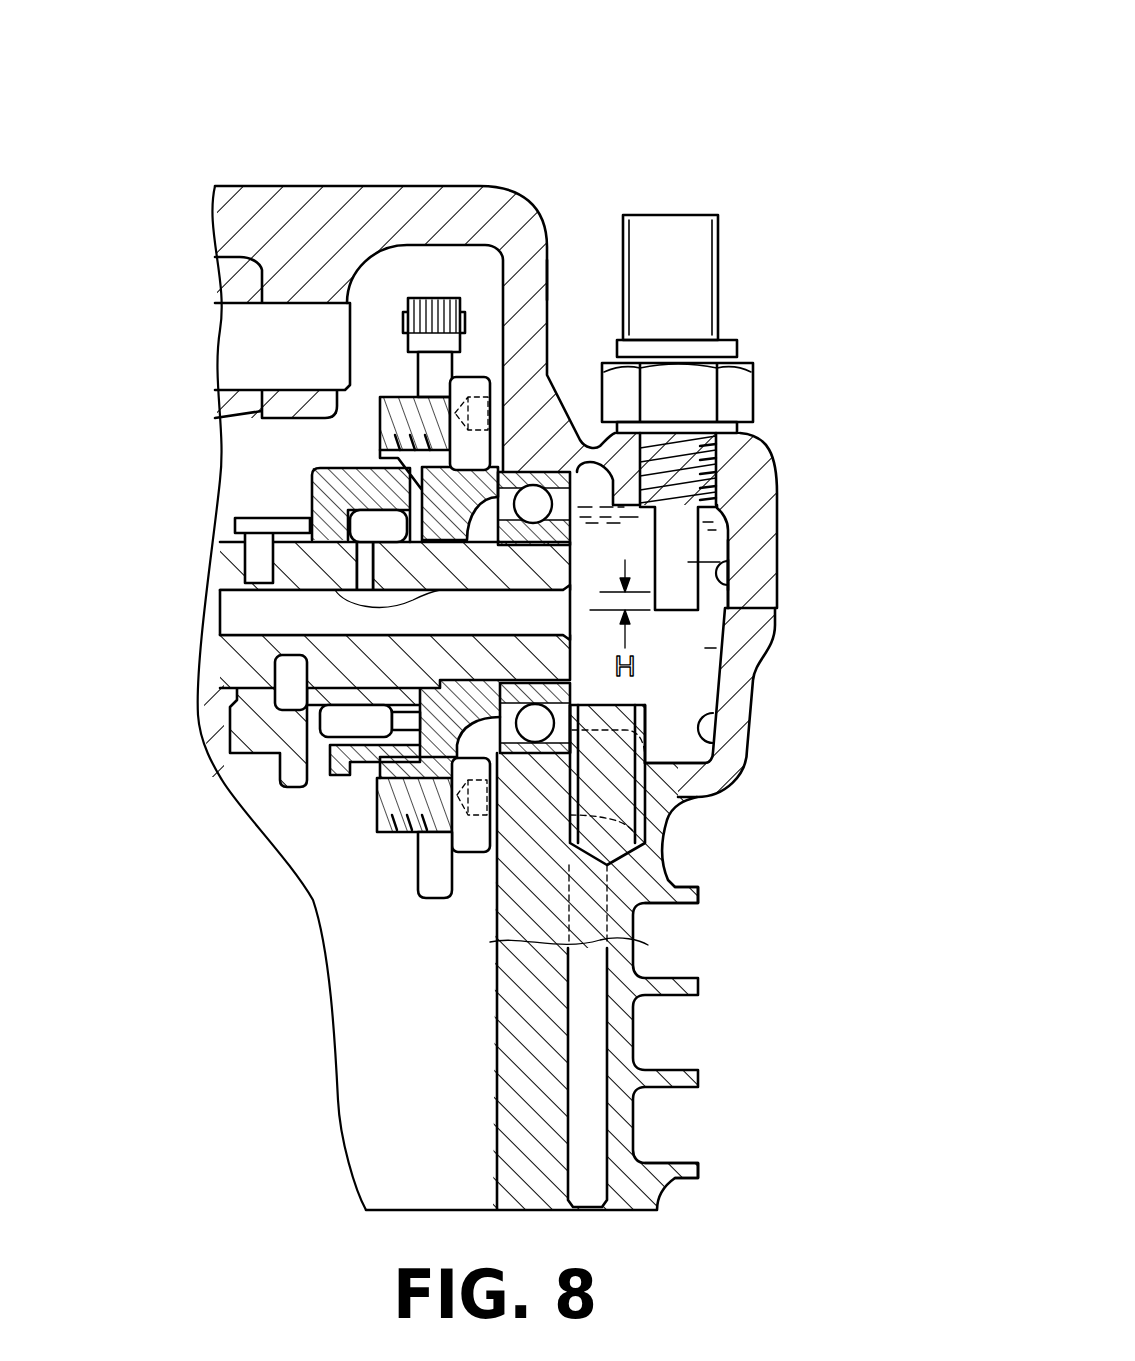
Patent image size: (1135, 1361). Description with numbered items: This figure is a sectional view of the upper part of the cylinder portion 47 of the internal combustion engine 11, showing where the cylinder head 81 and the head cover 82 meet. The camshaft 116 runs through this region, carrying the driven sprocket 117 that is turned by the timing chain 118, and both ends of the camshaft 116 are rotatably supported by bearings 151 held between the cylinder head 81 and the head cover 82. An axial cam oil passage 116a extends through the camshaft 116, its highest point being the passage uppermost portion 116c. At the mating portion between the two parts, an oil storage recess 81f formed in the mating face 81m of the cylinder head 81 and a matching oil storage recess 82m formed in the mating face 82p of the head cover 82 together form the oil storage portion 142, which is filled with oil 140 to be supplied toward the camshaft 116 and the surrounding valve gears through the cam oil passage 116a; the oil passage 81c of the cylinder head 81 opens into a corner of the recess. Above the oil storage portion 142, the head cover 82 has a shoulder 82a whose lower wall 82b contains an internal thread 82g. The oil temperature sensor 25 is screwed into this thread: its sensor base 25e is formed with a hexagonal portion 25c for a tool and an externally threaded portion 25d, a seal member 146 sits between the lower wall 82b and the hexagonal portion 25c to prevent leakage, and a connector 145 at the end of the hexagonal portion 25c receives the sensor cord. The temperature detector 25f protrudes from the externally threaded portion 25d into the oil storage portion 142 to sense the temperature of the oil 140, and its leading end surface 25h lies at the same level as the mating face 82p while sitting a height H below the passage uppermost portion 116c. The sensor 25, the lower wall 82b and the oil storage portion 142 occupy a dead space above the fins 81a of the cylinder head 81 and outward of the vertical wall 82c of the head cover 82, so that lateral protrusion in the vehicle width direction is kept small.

The internal combustion engine 11 is at (280, 147).
The cylinder portion 47 is at (346, 172).
The head cover 82 is at (536, 205).
The shoulder 82a is at (735, 447).
The lower wall 82b is at (748, 525).
The vertical wall 82c is at (552, 280).
The internal thread 82g is at (715, 500).
The oil storage recess 82m is at (730, 597).
The mating face 82p is at (745, 618).
The cylinder head 81 is at (583, 957).
The fins 81a is at (680, 912).
The oil passage 81c is at (598, 1136).
The oil storage recess 81f is at (700, 755).
The mating face 81m is at (700, 640).
The oil temperature sensor 25 is at (762, 378).
The hexagonal portion 25c is at (727, 392).
The externally threaded portion 25d is at (708, 468).
The sensor base 25e is at (767, 358).
The temperature detector 25f is at (745, 556).
The leading end surface 25h is at (705, 648).
The connector 145 is at (705, 267).
The seal member 146 is at (757, 428).
The oil 140 is at (702, 675).
The oil storage portion 142 is at (695, 690).
The bearings 151 is at (522, 478).
The camshaft 116 is at (320, 652).
The cam oil passage 116a is at (292, 638).
The passage uppermost portion 116c is at (413, 591).
The driven sprocket 117 is at (420, 857).
The timing chain 118 is at (415, 296).